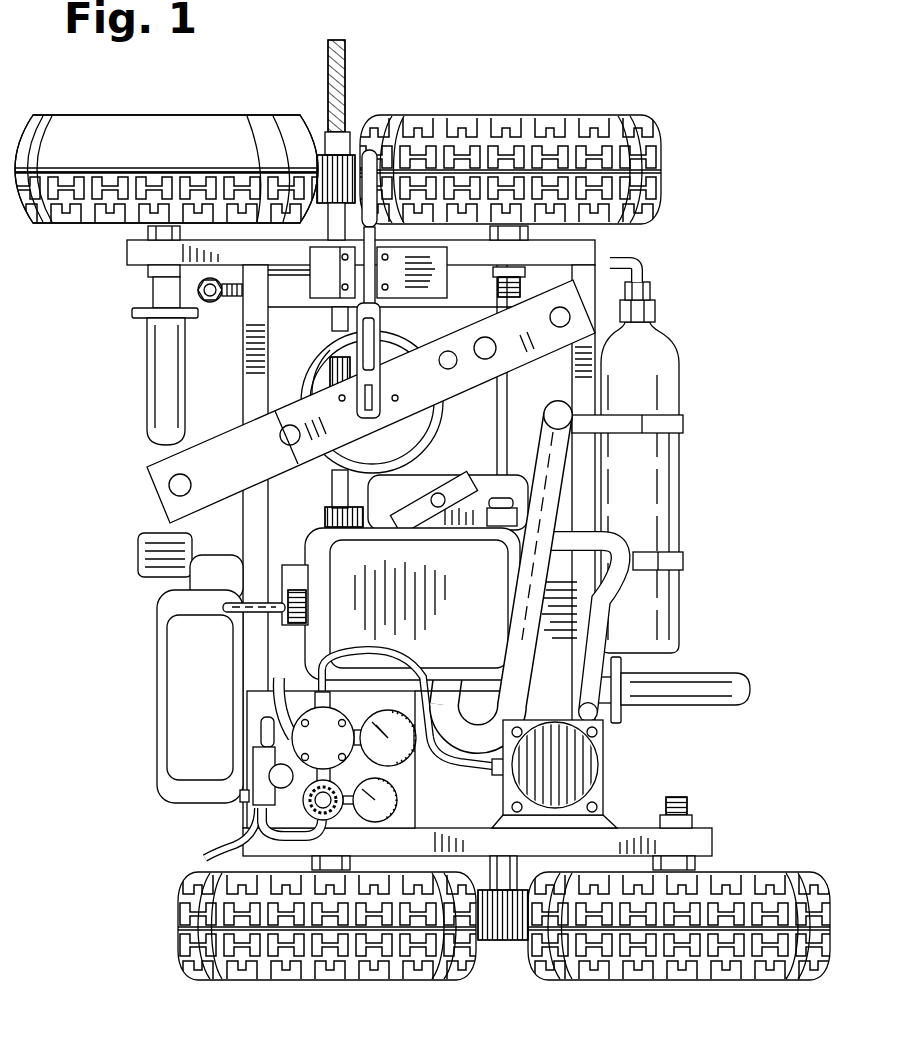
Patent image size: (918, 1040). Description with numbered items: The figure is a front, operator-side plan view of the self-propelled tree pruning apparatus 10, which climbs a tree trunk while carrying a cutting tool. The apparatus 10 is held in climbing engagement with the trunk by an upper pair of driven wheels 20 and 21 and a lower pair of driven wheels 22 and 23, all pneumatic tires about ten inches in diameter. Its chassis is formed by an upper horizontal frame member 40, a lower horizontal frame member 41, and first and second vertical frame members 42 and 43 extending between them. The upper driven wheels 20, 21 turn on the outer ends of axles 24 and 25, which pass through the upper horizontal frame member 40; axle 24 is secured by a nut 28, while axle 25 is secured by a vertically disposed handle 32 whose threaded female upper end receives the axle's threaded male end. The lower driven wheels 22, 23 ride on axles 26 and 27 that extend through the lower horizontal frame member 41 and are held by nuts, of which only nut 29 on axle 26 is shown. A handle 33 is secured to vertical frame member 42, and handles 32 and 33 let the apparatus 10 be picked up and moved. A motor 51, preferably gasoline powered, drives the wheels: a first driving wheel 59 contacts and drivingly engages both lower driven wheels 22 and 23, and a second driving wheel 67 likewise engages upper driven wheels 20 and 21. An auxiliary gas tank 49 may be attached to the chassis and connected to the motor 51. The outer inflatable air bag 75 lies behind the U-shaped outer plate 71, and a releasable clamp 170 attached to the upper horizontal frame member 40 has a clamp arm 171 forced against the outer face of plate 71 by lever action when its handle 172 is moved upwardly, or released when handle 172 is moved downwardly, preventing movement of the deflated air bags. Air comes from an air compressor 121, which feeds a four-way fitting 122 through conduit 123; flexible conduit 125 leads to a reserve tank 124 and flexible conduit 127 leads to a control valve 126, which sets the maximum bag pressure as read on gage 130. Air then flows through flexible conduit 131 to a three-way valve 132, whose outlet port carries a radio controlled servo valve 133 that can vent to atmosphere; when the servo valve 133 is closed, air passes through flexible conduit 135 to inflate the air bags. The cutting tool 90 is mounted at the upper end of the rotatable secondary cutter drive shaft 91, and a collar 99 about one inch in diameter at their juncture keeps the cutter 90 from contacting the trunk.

The tree pruning apparatus 10 is at (793, 301).
The upper driven wheel 20 is at (663, 148).
The upper driven wheel 21 is at (103, 117).
The lower driven wheel 22 is at (690, 982).
The lower driven wheel 23 is at (258, 982).
The axle 24 is at (528, 233).
The axle 25 is at (140, 228).
The axle 26 is at (712, 861).
The axle 27 is at (245, 863).
The nut 28 is at (510, 268).
The nut 29 is at (690, 815).
The handle 32 is at (146, 413).
The handle 33 is at (704, 672).
The upper horizontal frame member 40 is at (141, 303).
The lower horizontal frame member 41 is at (713, 840).
The first vertical frame member 42 is at (572, 362).
The second vertical frame member 43 is at (243, 373).
The auxiliary gas tank 49 is at (157, 705).
The motor 51 is at (388, 578).
The first driving wheel 59 is at (500, 942).
The second driving wheel 67 is at (324, 133).
The U-shaped outer plate 71 is at (147, 475).
The outer inflatable air bag 75 is at (441, 413).
The cutting tool 90 is at (348, 46).
The secondary cutter drive shaft 91 is at (333, 352).
The collar 99 is at (371, 150).
The air compressor 121 is at (598, 770).
The four-way fitting 122 is at (312, 712).
The conduit 123 is at (422, 675).
The reserve tank 124 is at (681, 468).
The flexible conduit 125 is at (640, 264).
The control valve 126 is at (400, 763).
The flexible conduit 127 is at (310, 790).
The gage 130 is at (397, 800).
The flexible conduit 131 is at (262, 812).
The three-way valve 132 is at (257, 765).
The radio controlled servo valve 133 is at (296, 778).
The flexible conduit 135 is at (262, 735).
The releasable clamp 170 is at (330, 270).
The clamp arm 171 is at (381, 386).
The handle 172 is at (383, 148).